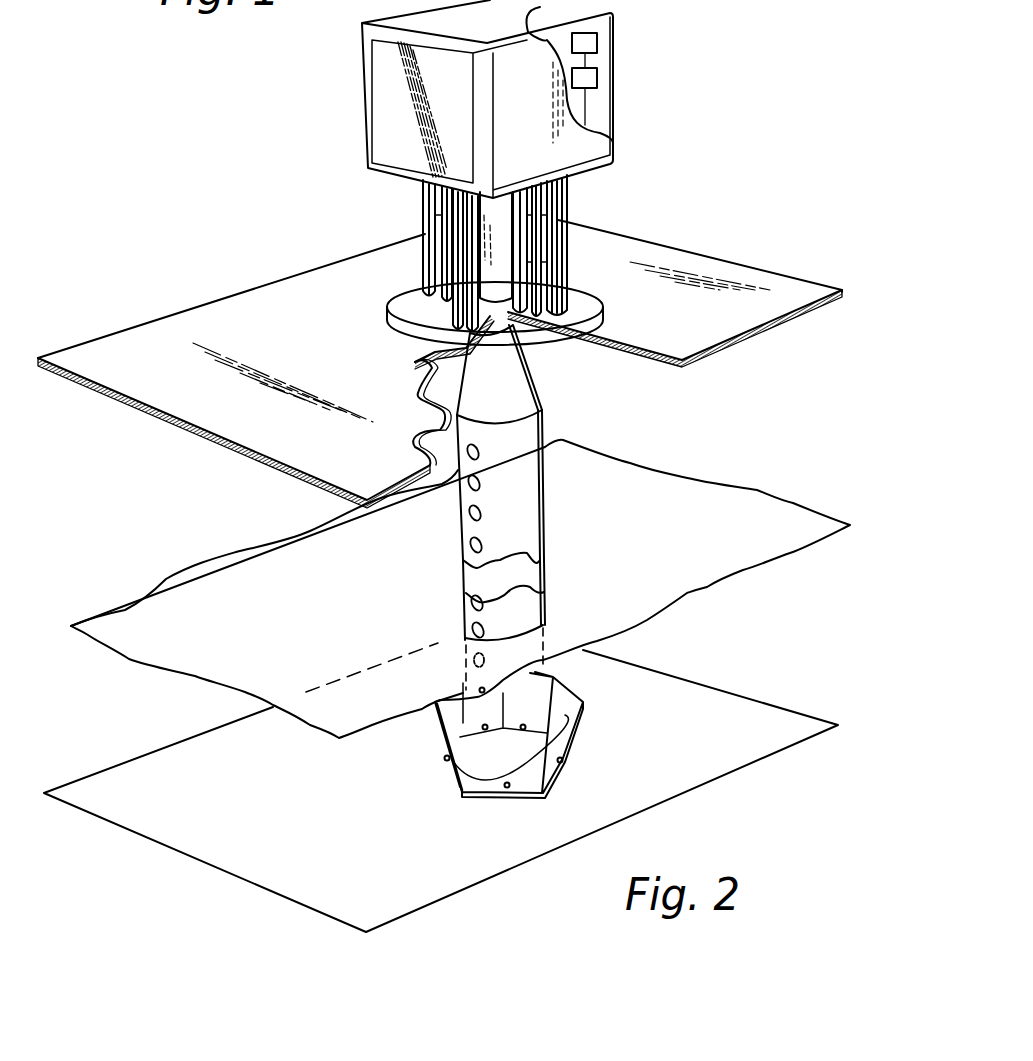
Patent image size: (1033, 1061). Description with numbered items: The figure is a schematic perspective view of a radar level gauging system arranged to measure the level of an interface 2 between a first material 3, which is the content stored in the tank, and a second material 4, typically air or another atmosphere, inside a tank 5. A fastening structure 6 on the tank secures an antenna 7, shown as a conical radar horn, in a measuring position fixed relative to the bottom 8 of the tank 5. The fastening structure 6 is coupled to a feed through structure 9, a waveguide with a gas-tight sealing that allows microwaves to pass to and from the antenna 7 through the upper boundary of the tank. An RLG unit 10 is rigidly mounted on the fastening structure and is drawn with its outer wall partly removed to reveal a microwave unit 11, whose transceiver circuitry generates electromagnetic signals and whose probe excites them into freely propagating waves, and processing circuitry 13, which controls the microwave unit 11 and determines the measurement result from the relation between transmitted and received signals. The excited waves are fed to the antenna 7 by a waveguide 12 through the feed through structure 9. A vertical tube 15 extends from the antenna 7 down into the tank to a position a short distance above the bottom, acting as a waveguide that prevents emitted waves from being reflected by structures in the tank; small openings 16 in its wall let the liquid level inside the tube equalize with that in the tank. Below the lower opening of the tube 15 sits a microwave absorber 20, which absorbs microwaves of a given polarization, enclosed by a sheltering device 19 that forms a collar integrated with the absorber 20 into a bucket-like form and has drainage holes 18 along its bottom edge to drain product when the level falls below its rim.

The interface 2 is at (760, 505).
The first material 3 is at (782, 290).
The second material 4 is at (705, 429).
The tank 5 is at (842, 290).
The fastening structure 6 is at (590, 300).
The antenna 7 is at (517, 393).
The bottom 8 is at (683, 703).
The feed through structure 9 is at (420, 298).
The RLG unit 10 is at (383, 102).
The microwave unit 11 is at (597, 78).
The waveguide 12 is at (503, 242).
The processing circuitry 13 is at (597, 43).
The vertical tube 15 is at (528, 492).
The openings 16 is at (462, 517).
The drainage holes 18 is at (447, 747).
The sheltering device 19 is at (482, 690).
The microwave absorber 20 is at (507, 750).